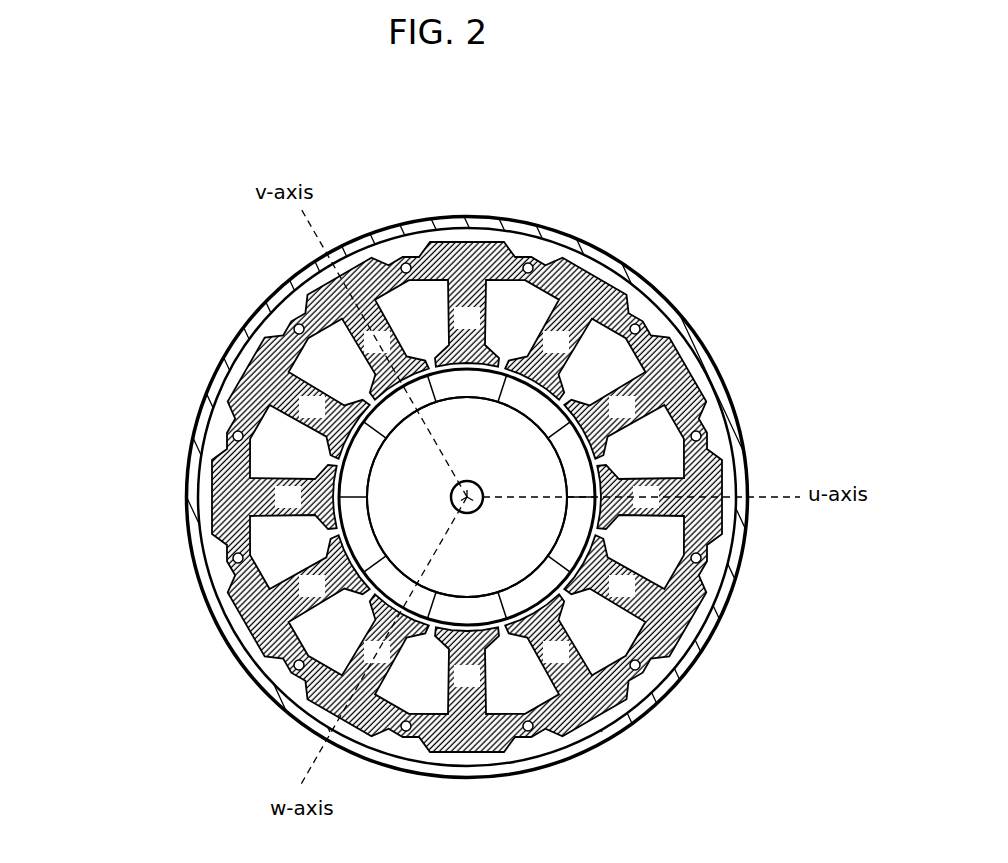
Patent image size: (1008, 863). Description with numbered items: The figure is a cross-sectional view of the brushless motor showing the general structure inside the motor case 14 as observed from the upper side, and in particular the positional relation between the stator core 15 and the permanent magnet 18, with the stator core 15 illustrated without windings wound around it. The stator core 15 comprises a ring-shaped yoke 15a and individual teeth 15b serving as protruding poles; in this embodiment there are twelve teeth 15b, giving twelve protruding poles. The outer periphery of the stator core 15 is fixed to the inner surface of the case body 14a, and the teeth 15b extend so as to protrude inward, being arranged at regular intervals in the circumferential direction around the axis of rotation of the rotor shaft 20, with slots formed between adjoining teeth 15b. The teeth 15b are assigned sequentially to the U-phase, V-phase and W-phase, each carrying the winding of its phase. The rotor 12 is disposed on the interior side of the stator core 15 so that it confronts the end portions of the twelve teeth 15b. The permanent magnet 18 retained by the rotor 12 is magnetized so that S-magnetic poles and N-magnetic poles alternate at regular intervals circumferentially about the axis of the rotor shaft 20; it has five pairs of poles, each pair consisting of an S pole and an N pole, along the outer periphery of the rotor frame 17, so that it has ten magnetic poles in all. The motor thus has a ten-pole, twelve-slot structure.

The rotor 12 is at (594, 428).
The motor case 14 is at (454, 465).
The case body 14a is at (552, 242).
The stator core 15 is at (379, 497).
The ring-shaped yoke 15a is at (223, 463).
The teeth 15b is at (253, 412).
The rotor frame 17 is at (513, 455).
The permanent magnet 18 is at (527, 400).
The rotor shaft 20 is at (482, 490).